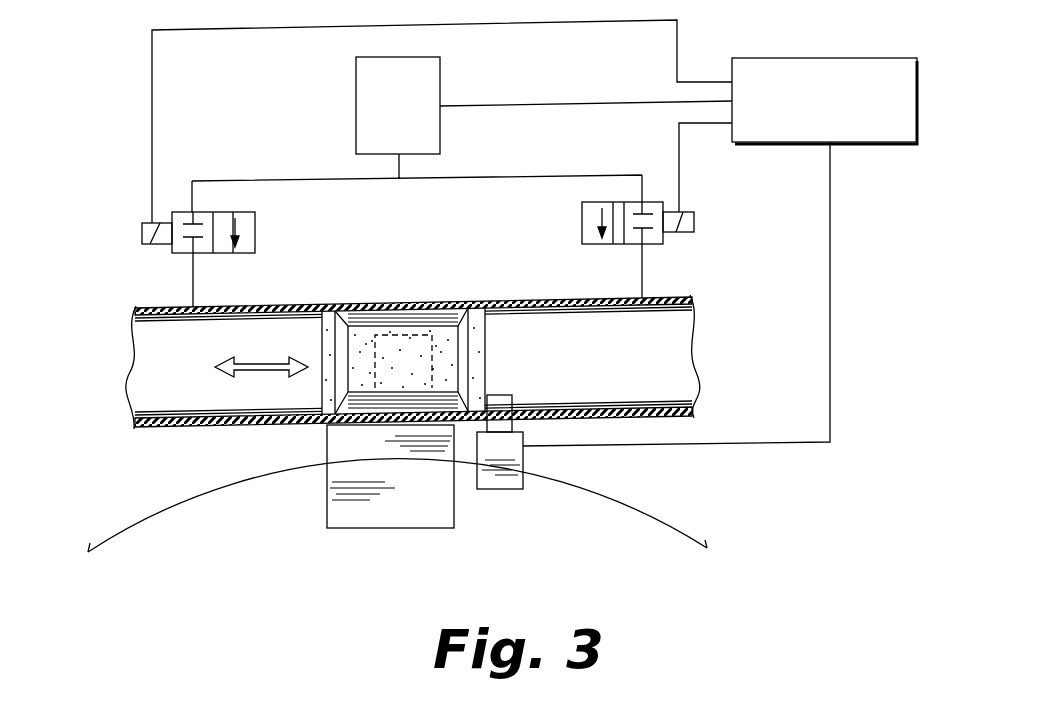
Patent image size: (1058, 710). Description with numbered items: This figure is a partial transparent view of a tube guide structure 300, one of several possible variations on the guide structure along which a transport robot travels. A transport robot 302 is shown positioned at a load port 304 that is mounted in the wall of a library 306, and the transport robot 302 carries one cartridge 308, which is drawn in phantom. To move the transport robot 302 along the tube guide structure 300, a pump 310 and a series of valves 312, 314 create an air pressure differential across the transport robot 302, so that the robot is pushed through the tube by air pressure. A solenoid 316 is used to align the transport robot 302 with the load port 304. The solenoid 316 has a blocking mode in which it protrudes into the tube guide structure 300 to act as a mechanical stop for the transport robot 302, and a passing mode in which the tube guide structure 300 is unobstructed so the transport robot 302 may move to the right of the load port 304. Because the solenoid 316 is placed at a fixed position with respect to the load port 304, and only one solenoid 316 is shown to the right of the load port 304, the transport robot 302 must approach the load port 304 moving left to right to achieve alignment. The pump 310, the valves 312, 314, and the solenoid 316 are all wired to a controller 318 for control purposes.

The tube guide structure 300 is at (180, 428).
The transport robot 302 is at (357, 318).
The load port 304 is at (360, 520).
The library 306 is at (636, 583).
The cartridge 308 is at (425, 325).
The pump 310 is at (440, 128).
The valve 312 is at (255, 218).
The valve 314 is at (582, 212).
The solenoid 316 is at (495, 483).
The controller 318 is at (838, 58).